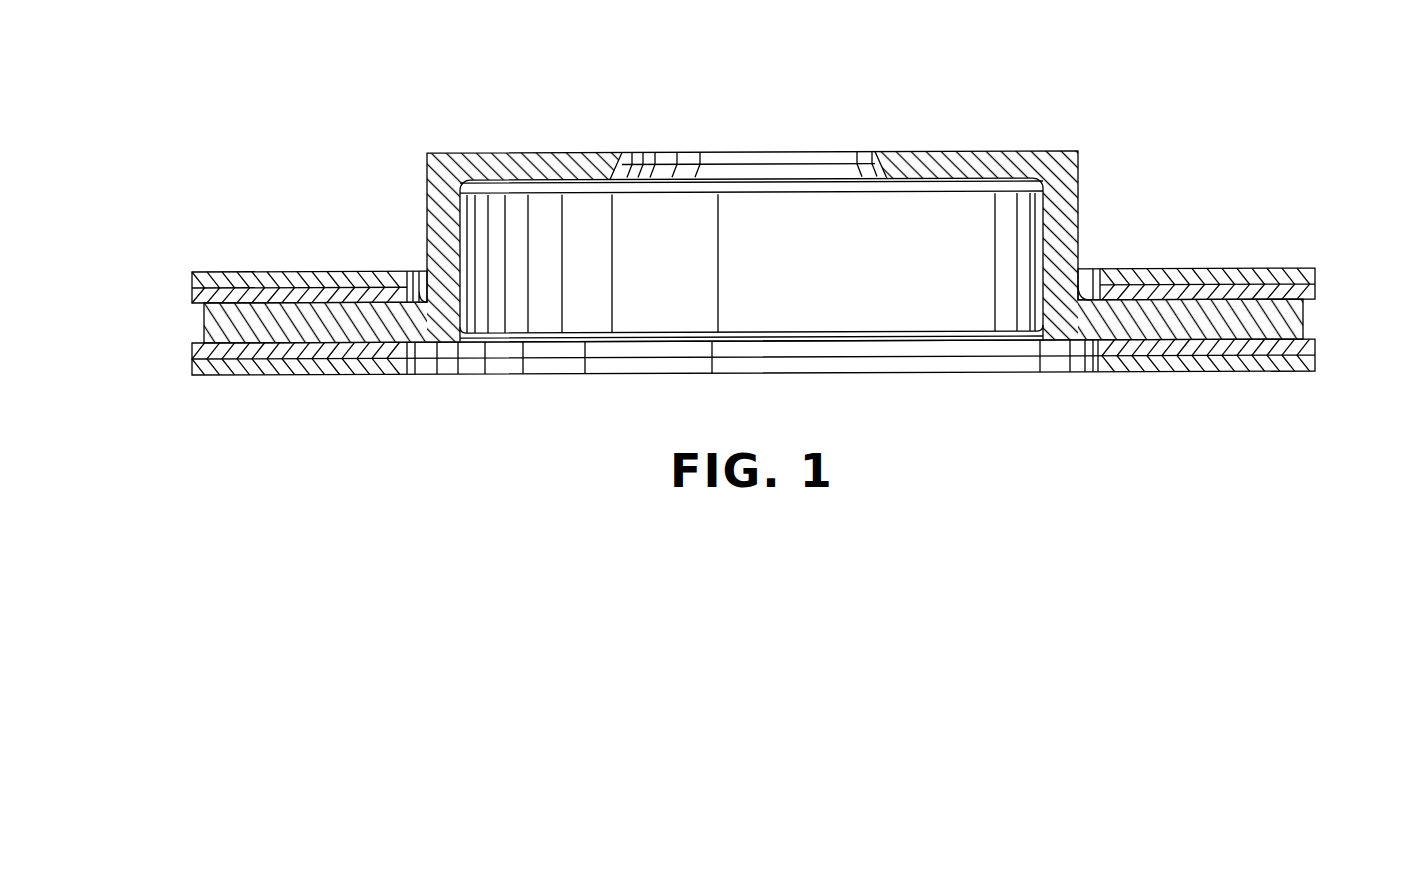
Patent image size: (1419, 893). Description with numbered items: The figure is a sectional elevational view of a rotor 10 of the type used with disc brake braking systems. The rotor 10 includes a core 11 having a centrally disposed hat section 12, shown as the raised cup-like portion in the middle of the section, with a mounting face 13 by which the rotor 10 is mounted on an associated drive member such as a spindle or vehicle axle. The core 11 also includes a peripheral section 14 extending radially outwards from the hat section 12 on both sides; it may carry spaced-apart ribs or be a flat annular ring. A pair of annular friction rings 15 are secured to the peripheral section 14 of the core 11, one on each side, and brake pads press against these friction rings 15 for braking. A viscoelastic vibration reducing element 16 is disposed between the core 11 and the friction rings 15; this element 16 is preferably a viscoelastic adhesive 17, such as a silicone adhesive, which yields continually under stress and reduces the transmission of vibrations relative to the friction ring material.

The rotor 10 is at (995, 130).
The core 11 is at (407, 217).
The hat section 12 is at (487, 154).
The mounting face 13 is at (562, 183).
The peripheral section 14 is at (203, 323).
The annular friction rings 15 is at (1315, 272).
The viscoelastic vibration reducing element 16 is at (1315, 288).
The viscoelastic adhesive 17 is at (190, 298).